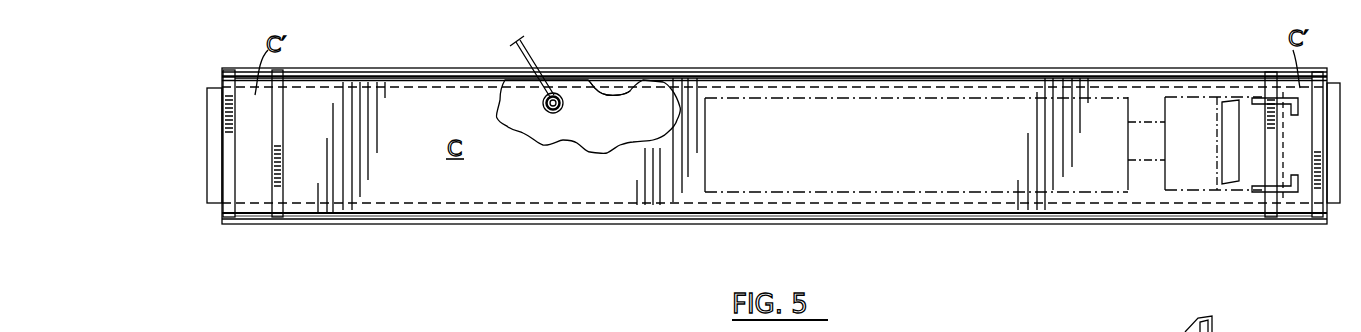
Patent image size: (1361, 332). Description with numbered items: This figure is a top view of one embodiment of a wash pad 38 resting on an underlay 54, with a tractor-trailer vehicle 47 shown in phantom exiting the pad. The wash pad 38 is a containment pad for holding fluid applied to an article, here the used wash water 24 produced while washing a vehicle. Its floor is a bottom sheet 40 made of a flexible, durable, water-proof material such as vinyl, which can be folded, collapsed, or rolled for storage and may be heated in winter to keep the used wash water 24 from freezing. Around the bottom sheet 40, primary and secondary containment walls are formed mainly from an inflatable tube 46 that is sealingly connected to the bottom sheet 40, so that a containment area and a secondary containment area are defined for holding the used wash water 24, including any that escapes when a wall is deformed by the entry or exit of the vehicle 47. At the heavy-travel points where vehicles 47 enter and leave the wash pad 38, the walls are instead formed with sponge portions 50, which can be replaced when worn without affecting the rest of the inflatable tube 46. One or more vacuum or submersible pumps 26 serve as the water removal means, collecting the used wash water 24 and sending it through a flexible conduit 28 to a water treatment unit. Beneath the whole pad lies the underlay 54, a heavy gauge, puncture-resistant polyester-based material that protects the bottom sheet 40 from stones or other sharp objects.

The used wash water 24 is at (637, 97).
The submersible pumps 26 is at (570, 93).
The flexible conduit 28 is at (540, 66).
The wash pad 38 is at (617, 232).
The bottom sheet 40 is at (410, 192).
The inflatable tube 46 is at (822, 78).
The tractor-trailer vehicle 47 is at (955, 98).
The sponge portions 50 is at (270, 222).
The underlay 54 is at (207, 178).